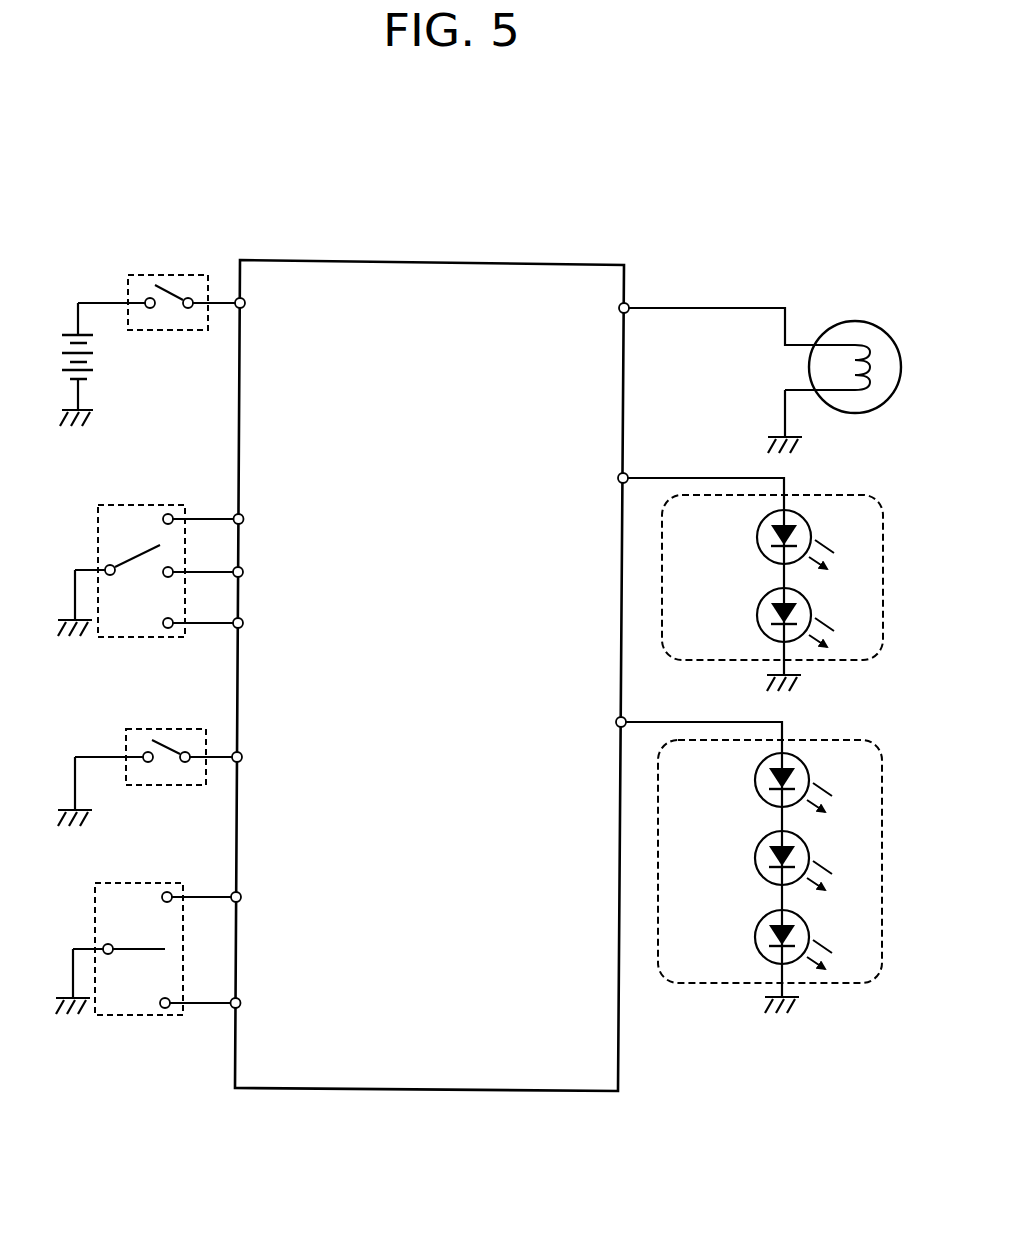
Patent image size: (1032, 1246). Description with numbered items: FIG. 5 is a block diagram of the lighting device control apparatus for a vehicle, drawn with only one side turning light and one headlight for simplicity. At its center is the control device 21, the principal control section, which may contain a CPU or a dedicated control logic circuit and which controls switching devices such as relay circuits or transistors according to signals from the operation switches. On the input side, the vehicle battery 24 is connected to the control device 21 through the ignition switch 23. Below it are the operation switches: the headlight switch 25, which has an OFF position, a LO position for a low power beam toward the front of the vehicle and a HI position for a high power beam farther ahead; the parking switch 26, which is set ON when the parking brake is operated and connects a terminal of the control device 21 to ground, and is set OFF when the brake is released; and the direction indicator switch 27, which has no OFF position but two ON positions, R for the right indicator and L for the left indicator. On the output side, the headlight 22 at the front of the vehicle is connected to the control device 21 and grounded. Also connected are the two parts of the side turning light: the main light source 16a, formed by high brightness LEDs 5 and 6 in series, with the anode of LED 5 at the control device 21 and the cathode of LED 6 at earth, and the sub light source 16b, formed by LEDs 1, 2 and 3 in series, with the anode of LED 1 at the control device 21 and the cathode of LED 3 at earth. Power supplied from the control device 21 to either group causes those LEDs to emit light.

The LED 1 is at (755, 777).
The LED 2 is at (755, 857).
The LED 3 is at (755, 937).
The high brightness LED 5 is at (758, 532).
The high brightness LED 6 is at (758, 612).
The main light source 16a is at (758, 563).
The sub light source 16b is at (755, 846).
The control device 21 is at (423, 261).
The headlight 22 is at (857, 322).
The ignition switch 23 is at (168, 275).
The battery 24 is at (93, 352).
The headlight switch 25 is at (142, 505).
The parking switch 26 is at (165, 729).
The direction indicator switch 27 is at (140, 883).